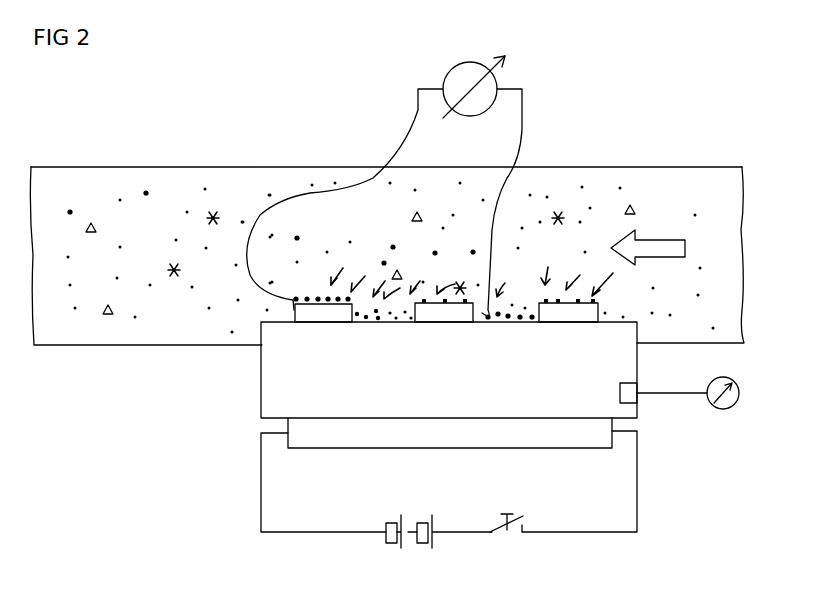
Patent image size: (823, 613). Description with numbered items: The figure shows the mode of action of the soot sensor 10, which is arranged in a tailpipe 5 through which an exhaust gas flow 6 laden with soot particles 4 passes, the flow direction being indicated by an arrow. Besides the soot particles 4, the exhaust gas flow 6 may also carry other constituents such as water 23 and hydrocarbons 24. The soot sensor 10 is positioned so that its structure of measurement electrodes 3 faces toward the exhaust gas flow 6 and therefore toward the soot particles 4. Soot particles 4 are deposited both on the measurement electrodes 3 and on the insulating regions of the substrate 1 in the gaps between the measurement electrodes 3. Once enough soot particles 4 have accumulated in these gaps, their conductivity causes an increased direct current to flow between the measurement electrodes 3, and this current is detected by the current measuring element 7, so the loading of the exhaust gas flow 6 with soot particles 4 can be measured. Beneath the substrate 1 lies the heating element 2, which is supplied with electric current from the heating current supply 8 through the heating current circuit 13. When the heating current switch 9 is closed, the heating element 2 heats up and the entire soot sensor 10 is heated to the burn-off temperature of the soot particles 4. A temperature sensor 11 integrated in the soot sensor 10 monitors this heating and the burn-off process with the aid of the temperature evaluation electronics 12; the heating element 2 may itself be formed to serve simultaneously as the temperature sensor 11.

The substrate 1 is at (637, 366).
The heating element 2 is at (443, 448).
The measurement electrodes 3 is at (444, 322).
The soot particles 4 is at (146, 196).
The tailpipe 5 is at (190, 167).
The exhaust gas flow 6 is at (660, 258).
The current measuring element 7 is at (468, 62).
The heating current supply 8 is at (410, 548).
The heating current switch 9 is at (505, 531).
The soot sensor 10 is at (221, 387).
The temperature sensor 11 is at (640, 400).
The temperature evaluation electronics 12 is at (725, 410).
The heating current circuit 13 is at (637, 480).
The water 23 is at (214, 224).
The hydrocarbons 24 is at (92, 235).